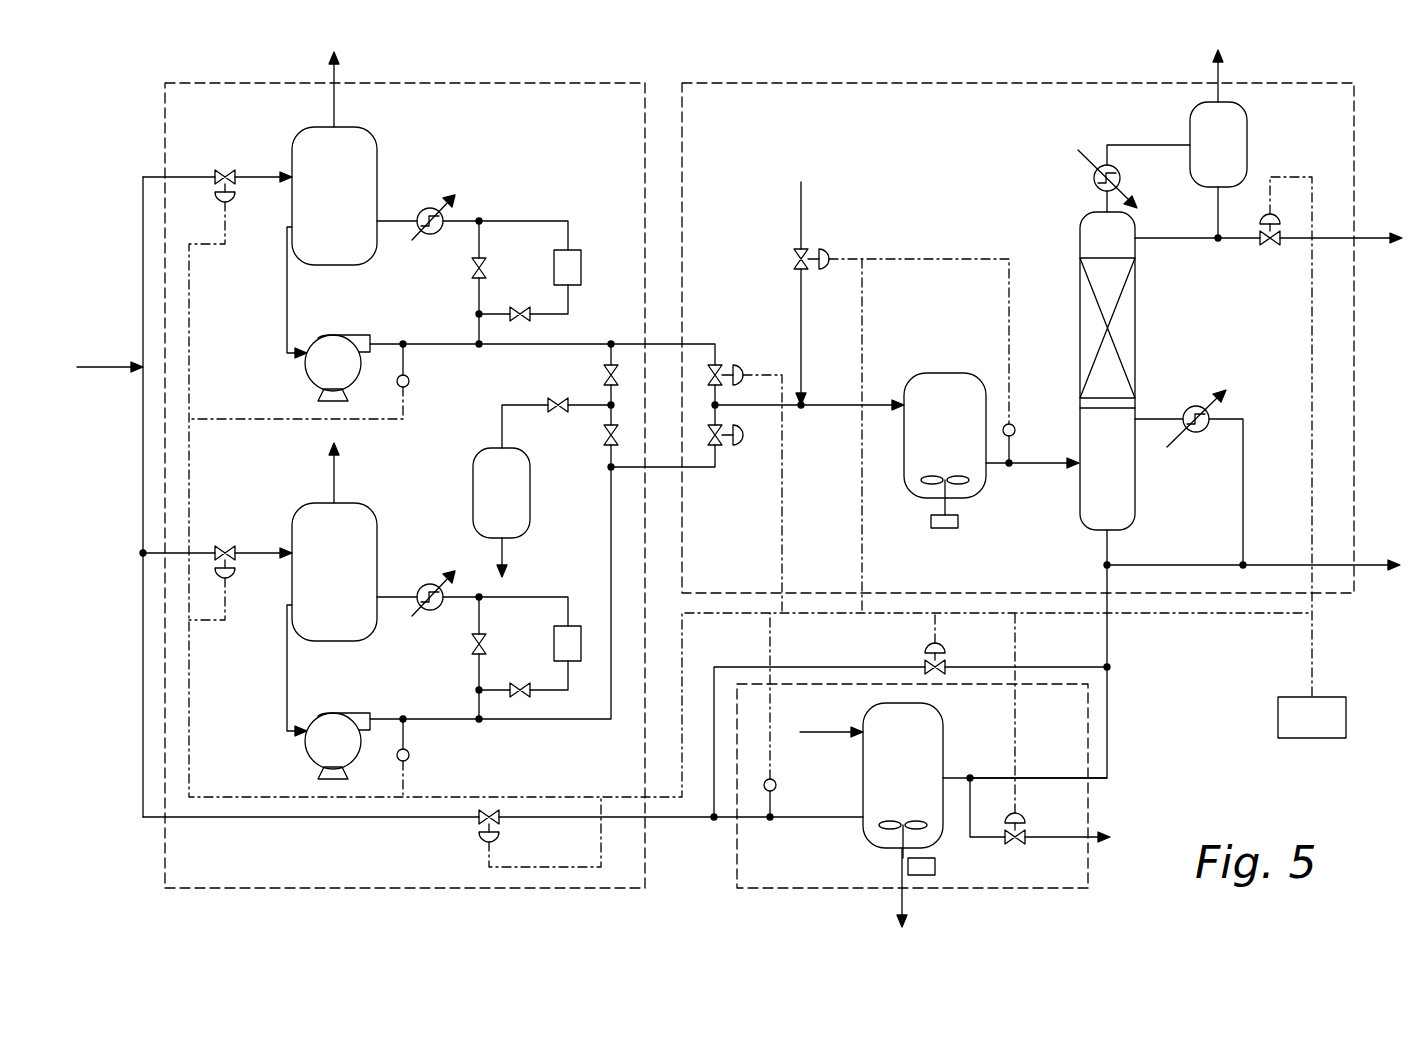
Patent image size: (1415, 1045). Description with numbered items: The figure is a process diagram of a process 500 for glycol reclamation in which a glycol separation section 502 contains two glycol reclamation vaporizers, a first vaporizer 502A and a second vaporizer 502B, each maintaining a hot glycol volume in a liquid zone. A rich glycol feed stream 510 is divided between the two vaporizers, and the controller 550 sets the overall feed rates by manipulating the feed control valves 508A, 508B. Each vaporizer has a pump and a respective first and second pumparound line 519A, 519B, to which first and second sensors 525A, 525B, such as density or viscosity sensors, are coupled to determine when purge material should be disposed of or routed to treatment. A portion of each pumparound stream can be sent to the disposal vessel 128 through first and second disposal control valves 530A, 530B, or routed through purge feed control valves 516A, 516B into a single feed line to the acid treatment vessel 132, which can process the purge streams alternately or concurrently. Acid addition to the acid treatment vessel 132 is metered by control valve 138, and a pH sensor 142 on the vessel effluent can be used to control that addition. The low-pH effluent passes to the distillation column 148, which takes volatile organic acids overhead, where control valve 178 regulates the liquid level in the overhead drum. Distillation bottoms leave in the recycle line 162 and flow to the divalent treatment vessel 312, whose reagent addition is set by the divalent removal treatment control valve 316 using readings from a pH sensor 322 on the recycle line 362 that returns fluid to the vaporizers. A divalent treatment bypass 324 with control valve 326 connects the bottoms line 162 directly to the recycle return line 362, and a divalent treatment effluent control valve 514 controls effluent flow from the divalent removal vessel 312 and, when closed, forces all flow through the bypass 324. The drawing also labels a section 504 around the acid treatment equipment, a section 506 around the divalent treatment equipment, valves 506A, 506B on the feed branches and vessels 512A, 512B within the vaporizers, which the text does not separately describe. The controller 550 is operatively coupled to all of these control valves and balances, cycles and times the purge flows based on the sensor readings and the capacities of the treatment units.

The process 500 is at (1210, 786).
The glycol separation section 502 is at (566, 83).
The first vaporizer 502A is at (496, 163).
The second vaporizer 502B is at (127, 666).
The second unit 504 is at (1276, 83).
The third unit 506 is at (1001, 890).
The inlet valve 506A is at (258, 172).
The inlet valve 506B is at (258, 548).
The feed control valve 508A is at (229, 213).
The feed control valve 508B is at (229, 589).
The rich glycol feed stream 510 is at (105, 362).
The vessel 512A is at (378, 160).
The vessel 512B is at (378, 540).
The divalent treatment effluent control valve 514 is at (477, 841).
The purge feed control valve 516A is at (738, 364).
The purge feed control valve 516B is at (740, 448).
The first pumparound line 519A is at (435, 340).
The second pumparound line 519B is at (437, 715).
The first sensor 525A is at (410, 378).
The second sensor 525B is at (410, 754).
The first disposal control valve 530A is at (600, 375).
The second disposal control valve 530B is at (604, 435).
The disposal vessel 128 is at (473, 483).
The acid treatment vessel 132 is at (945, 373).
The control valve 138 is at (793, 259).
The pH sensor 142 is at (1015, 428).
The distillation column 148 is at (1136, 325).
The recycle line 162 is at (1108, 722).
The control valve 178 is at (1268, 246).
The divalent treatment vessel 312 is at (944, 735).
The divalent removal treatment control valve 316 is at (1019, 809).
The pH sensor 322 is at (777, 784).
The divalent treatment bypass 324 is at (1031, 667).
The control valve 326 is at (926, 645).
The recycle line 362 is at (275, 818).
The controller 550 is at (1312, 717).